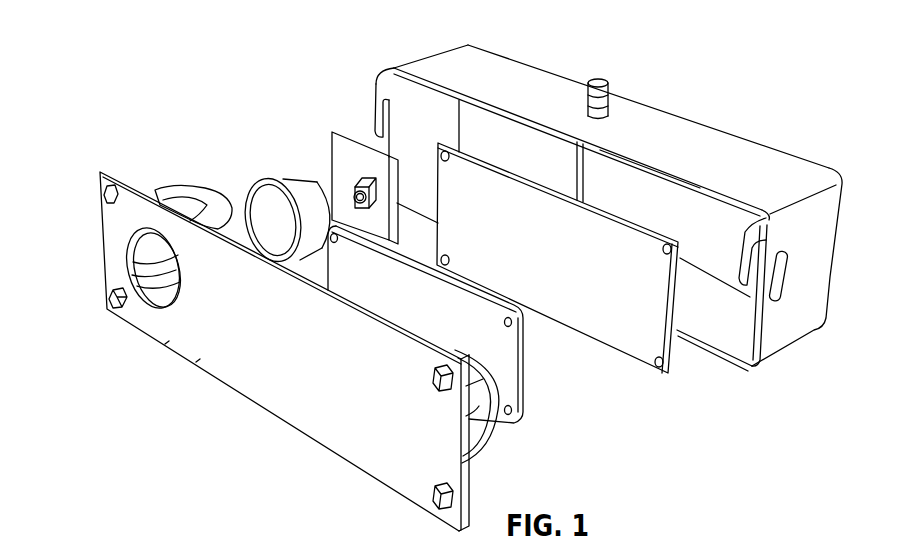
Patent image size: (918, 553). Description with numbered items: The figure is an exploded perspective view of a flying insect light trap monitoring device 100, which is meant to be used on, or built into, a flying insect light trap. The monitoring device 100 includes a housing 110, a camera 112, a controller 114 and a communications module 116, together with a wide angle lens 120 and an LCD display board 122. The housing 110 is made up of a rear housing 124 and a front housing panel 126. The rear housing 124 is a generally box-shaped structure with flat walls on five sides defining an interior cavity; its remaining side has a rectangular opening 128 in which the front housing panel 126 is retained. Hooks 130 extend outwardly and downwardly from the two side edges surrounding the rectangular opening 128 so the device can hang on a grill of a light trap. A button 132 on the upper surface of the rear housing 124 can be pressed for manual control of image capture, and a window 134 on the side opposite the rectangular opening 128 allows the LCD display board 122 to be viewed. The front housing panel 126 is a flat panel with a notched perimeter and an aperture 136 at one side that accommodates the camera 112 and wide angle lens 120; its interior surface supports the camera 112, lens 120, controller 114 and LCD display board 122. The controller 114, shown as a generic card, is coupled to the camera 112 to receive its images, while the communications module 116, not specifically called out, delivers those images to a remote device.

The flying insect light trap monitoring device 100 is at (128, 47).
The housing 110 is at (594, 246).
The camera 112 is at (346, 180).
The controller 114 is at (446, 469).
The communications module 116 is at (519, 344).
The wide angle lens 120 is at (258, 180).
The LCD display board 122 is at (674, 349).
The rear housing 124 is at (683, 116).
The front housing panel 126 is at (253, 351).
The rectangular opening 128 is at (727, 196).
The hooks 130 is at (371, 82).
The button 132 is at (598, 77).
The window 134 is at (673, 199).
The aperture 136 is at (128, 258).